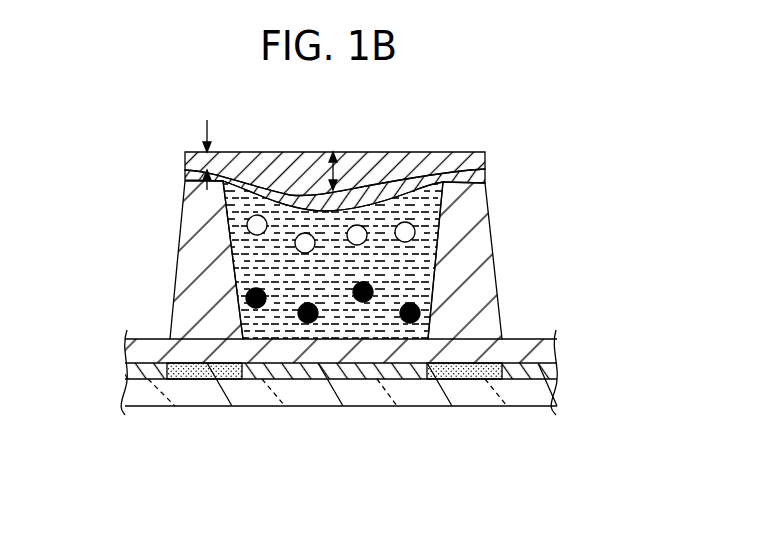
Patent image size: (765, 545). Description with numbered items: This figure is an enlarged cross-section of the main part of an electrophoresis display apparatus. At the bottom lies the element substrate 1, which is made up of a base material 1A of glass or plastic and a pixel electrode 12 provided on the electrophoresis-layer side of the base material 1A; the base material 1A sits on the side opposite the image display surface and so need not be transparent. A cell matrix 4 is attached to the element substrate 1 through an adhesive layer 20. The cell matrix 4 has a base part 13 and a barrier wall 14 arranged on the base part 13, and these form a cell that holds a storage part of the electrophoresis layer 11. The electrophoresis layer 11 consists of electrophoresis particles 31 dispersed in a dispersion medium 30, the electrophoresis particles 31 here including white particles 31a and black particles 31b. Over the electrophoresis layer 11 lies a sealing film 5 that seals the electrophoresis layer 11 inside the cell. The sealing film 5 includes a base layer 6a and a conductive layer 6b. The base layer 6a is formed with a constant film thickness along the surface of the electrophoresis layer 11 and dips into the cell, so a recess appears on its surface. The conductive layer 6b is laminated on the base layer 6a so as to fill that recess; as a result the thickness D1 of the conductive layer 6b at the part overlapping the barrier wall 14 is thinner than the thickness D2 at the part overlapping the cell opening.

The element substrate 1 is at (359, 418).
The base material 1A is at (532, 395).
The cell matrix 4 is at (304, 272).
The sealing film 5 is at (395, 177).
The base layer 6a is at (475, 177).
The conductive layer 6b is at (477, 160).
The electrophoresis layer 11 is at (333, 357).
The pixel electrode 12 is at (410, 372).
The base part 13 is at (150, 337).
The barrier wall 14 is at (198, 267).
The adhesive layer 20 is at (467, 376).
The dispersion medium 30 is at (260, 327).
The electrophoresis particles 31 is at (333, 356).
The white particles 31a is at (310, 246).
The black particles 31b is at (308, 316).
The thickness of the conductive layer corresponding to the barrier wall D1 is at (212, 160).
The thickness of the conductive layer corresponding to the recess D2 is at (340, 174).